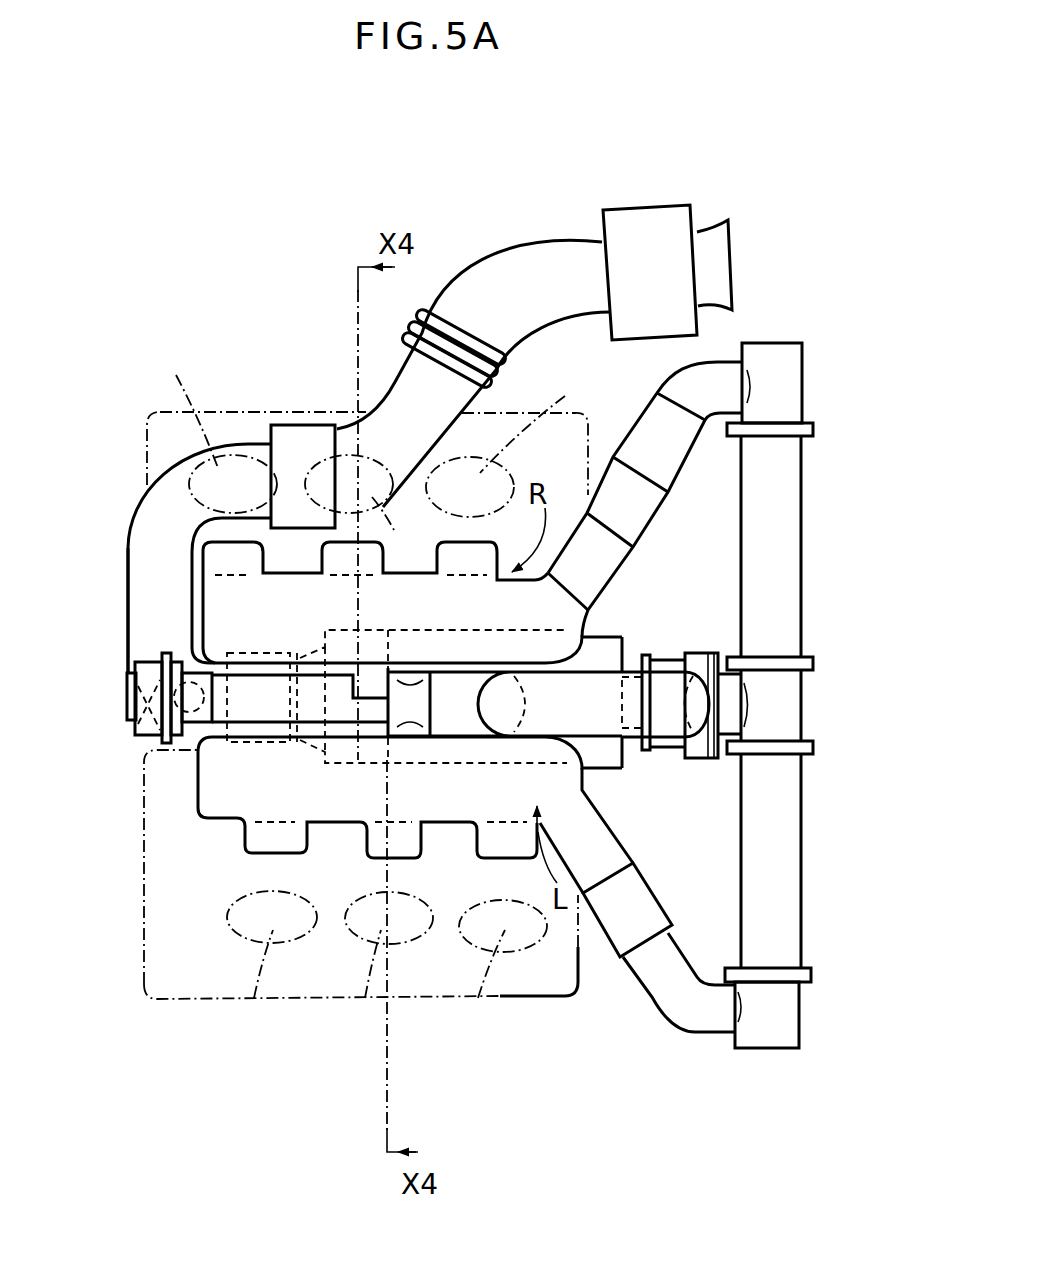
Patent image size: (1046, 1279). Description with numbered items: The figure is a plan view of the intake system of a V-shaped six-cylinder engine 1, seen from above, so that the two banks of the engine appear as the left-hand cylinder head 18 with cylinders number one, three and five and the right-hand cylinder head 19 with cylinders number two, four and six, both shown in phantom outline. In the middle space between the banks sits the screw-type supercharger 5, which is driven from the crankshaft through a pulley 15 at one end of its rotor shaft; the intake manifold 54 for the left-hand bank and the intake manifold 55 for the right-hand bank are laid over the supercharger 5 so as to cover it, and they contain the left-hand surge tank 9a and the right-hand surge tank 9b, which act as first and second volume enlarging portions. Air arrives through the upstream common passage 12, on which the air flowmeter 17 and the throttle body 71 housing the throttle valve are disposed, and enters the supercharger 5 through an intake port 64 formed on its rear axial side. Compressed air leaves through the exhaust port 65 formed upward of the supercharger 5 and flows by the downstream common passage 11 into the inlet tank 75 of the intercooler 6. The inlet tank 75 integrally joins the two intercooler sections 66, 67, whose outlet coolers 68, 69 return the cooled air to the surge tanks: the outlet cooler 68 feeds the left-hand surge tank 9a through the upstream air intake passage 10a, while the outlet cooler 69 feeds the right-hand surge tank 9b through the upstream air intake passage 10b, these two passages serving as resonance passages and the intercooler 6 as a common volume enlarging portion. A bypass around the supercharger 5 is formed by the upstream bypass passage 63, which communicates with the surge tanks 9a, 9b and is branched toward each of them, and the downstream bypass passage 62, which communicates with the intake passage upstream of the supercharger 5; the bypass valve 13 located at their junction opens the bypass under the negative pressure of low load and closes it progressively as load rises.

The engine 1 is at (510, 672).
The supercharger 5 is at (400, 725).
The intercooler 6 is at (816, 695).
The left-hand surge tank 9a is at (351, 797).
The right-hand surge tank 9b is at (344, 508).
The upstream air intake passage 10a is at (658, 983).
The upstream air intake passage 10b is at (539, 390).
The downstream common passage 11 is at (598, 720).
The upstream common passage 12 is at (138, 637).
The bypass valve 13 is at (153, 688).
The pulley 15 is at (667, 750).
The air flowmeter 17 is at (660, 208).
The left-hand cylinder head 18 is at (525, 1000).
The right-hand cylinder head 19 is at (243, 412).
The intake manifold 54 is at (215, 756).
The intake manifold 55 is at (202, 600).
The downstream bypass passage 62 is at (130, 686).
The upstream bypass passage 63 is at (362, 708).
The intake port 64 is at (293, 737).
The exhaust port 65 is at (518, 704).
The intercooler section 66 is at (795, 851).
The intercooler section 67 is at (797, 517).
The outlet cooler 68 is at (795, 1013).
The outlet cooler 69 is at (803, 378).
The throttle body 71 is at (308, 425).
The inlet tank 75 is at (797, 707).